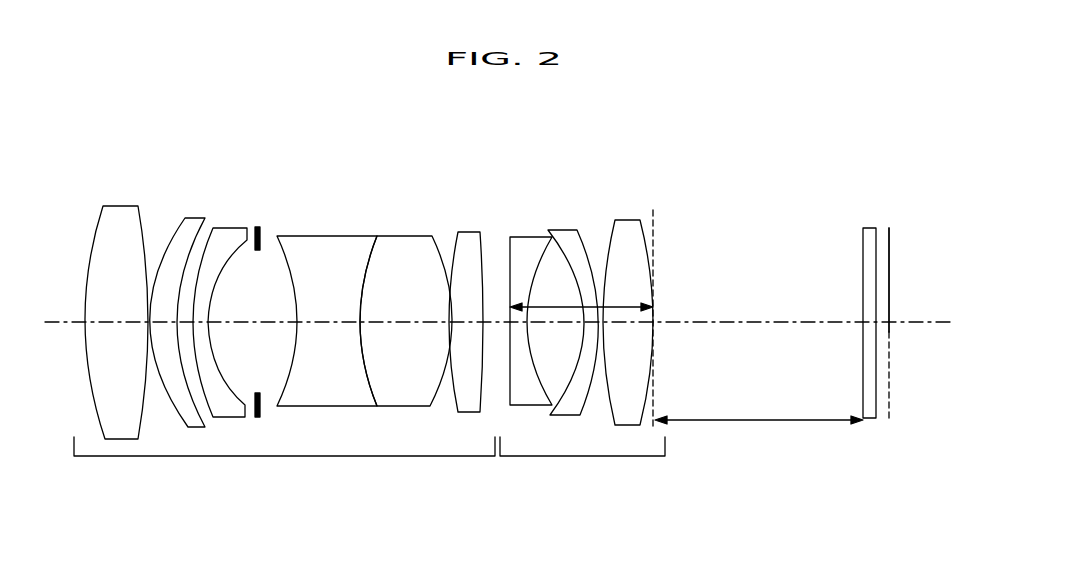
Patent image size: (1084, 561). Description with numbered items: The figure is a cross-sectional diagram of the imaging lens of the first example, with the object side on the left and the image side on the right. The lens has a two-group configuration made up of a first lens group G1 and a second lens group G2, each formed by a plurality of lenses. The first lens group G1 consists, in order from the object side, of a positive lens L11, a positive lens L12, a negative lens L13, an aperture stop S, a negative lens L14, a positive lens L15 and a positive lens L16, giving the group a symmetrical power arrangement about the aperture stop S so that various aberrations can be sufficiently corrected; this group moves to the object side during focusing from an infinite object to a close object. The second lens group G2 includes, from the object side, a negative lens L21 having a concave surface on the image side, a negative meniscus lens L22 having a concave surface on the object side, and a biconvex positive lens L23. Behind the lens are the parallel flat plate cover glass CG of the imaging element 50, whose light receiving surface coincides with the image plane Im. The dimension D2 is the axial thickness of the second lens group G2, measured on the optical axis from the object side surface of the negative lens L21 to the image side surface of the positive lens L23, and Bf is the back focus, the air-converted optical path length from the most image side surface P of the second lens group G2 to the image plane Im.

The positive lens L11 is at (112, 204).
The positive lens L12 is at (185, 217).
The negative lens L13 is at (220, 227).
The aperture stop S is at (259, 227).
The negative lens L14 is at (352, 212).
The positive lens L15 is at (398, 235).
The positive lens L16 is at (460, 231).
The negative lens L21 is at (504, 236).
The negative meniscus lens L22 is at (578, 230).
The positive lens L23 is at (622, 219).
The most image side surface P is at (652, 313).
The axial thickness of the second lens group D2 is at (560, 306).
The cover glass CG is at (863, 228).
The imaging element 50 is at (889, 232).
The image plane Im is at (889, 330).
The back focus Bf is at (797, 420).
The first lens group G1 is at (290, 456).
The second lens group G2 is at (588, 456).